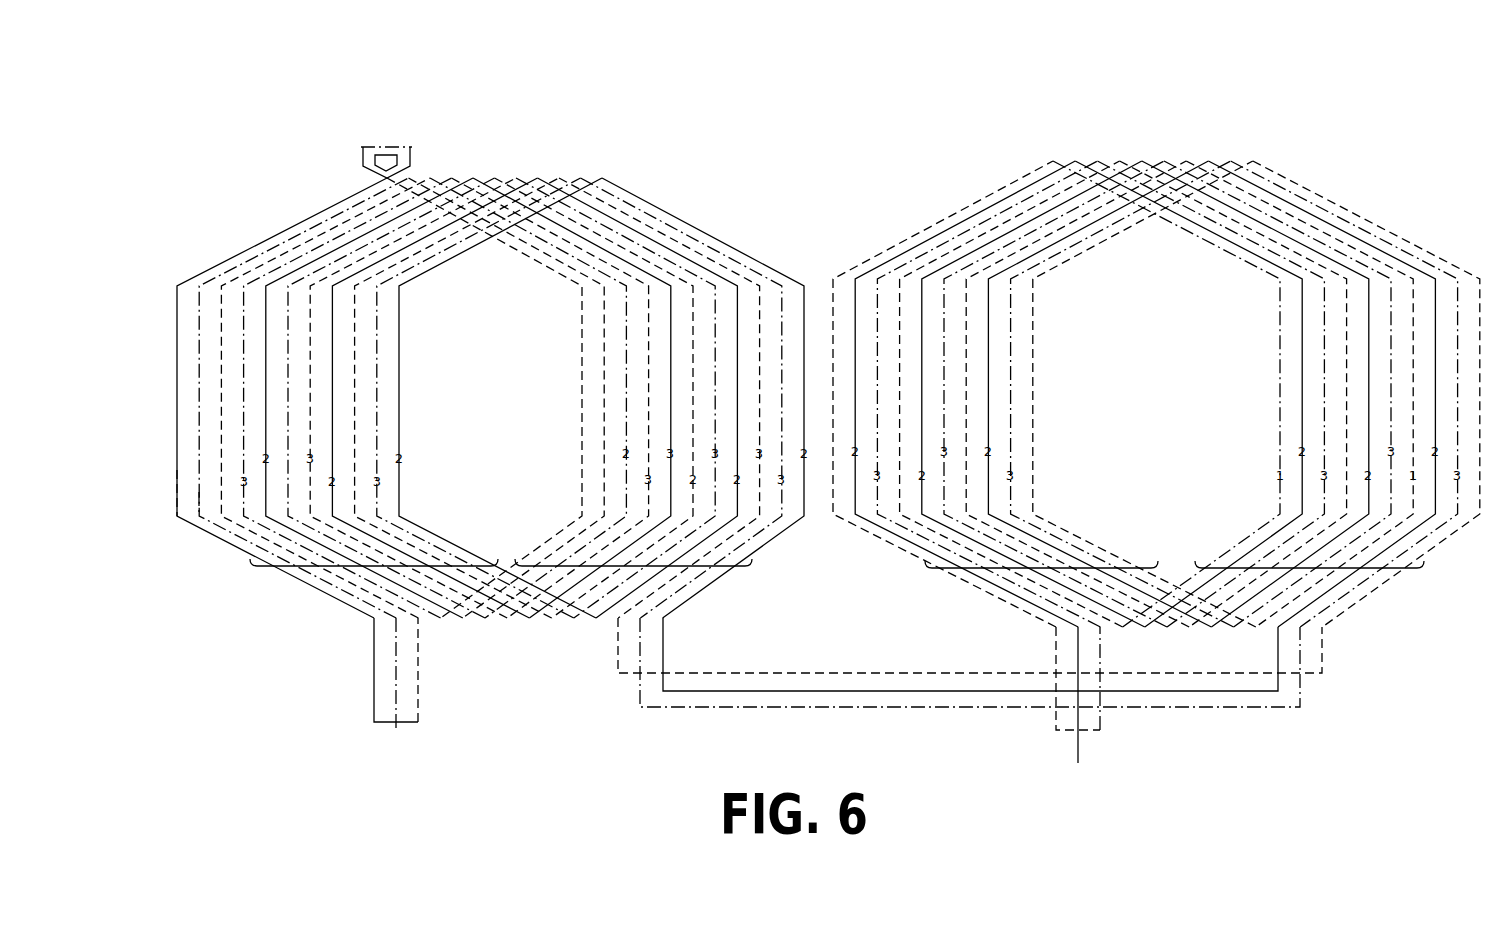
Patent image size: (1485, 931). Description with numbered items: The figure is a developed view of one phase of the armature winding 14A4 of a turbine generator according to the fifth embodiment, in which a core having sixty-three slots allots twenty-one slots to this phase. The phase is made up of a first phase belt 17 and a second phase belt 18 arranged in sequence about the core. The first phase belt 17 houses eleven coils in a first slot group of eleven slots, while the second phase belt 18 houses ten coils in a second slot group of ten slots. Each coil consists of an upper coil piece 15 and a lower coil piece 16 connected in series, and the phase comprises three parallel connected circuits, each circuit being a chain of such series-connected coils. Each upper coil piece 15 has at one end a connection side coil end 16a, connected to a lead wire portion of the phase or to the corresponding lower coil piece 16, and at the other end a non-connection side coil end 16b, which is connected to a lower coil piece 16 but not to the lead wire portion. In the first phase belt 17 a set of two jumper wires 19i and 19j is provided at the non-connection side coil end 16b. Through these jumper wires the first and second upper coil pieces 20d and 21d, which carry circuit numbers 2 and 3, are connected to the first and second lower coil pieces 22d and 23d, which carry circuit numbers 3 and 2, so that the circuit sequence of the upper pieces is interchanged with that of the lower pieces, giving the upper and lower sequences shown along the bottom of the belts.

The armature winding phase 14A4 is at (847, 262).
The first phase belt 17 is at (238, 243).
The second phase belt 18 is at (1379, 184).
The first upper coil piece 20d is at (285, 236).
The second upper coil piece 21d is at (338, 205).
The first lower coil piece 22d is at (604, 232).
The second lower coil piece 23d is at (607, 277).
The non-connection side coil end 16b is at (350, 146).
The jumper wire 19i is at (400, 157).
The jumper wire 19j is at (392, 138).
The upper coil piece 15 is at (392, 568).
The lower coil piece 16 is at (651, 566).
The connection side coil end 16a is at (360, 684).
The circuit number 2 is at (390, 482).
The circuit number 3 is at (391, 479).